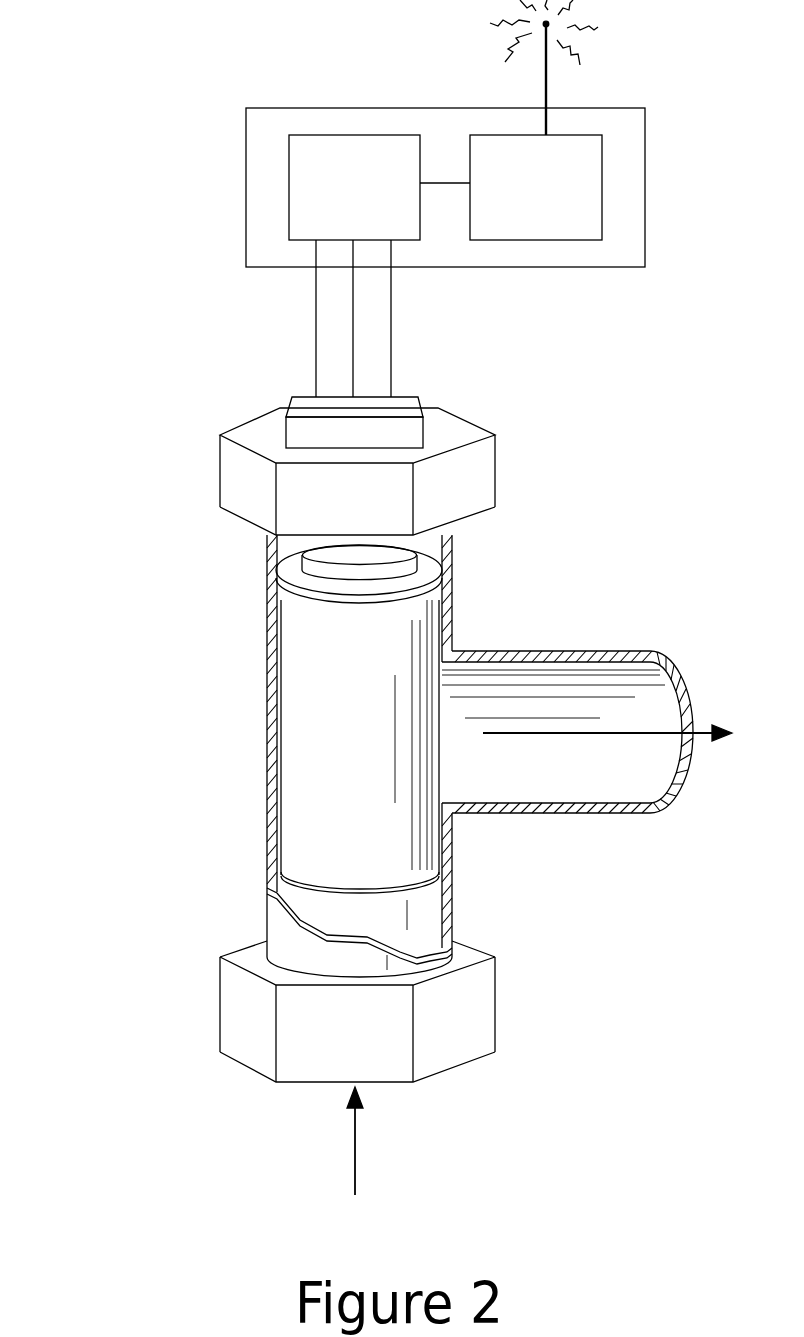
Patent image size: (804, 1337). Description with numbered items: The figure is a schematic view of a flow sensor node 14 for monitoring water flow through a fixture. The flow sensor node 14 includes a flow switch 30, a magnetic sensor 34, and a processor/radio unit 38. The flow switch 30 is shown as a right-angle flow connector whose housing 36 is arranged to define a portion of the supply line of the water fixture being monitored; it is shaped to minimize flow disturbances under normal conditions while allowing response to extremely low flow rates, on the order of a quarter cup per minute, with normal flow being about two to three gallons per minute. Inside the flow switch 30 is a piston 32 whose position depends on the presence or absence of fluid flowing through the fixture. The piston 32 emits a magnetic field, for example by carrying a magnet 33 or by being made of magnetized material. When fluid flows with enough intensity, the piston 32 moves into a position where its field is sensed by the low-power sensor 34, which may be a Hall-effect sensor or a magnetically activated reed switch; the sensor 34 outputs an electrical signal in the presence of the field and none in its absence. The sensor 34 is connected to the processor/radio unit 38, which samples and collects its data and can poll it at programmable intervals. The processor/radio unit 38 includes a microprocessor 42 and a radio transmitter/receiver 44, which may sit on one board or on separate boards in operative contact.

The flow sensor node 14 is at (104, 88).
The flow switch 30 is at (170, 434).
The piston 32 is at (433, 855).
The magnet 33 is at (427, 567).
The magnetic sensor 34 is at (417, 425).
The housing 36 is at (628, 652).
The processor/radio unit 38 is at (645, 193).
The microprocessor 42 is at (351, 135).
The radio transmitter/receiver 44 is at (493, 135).